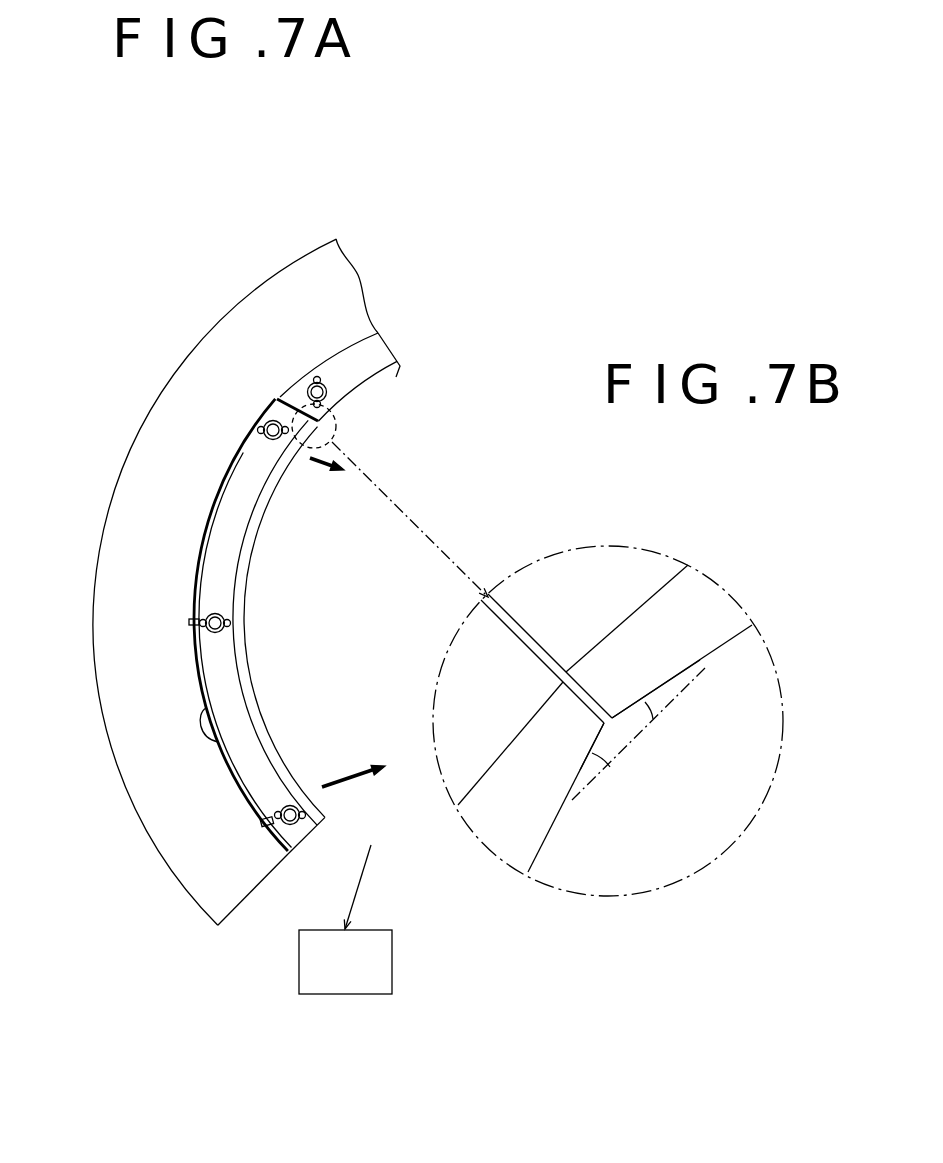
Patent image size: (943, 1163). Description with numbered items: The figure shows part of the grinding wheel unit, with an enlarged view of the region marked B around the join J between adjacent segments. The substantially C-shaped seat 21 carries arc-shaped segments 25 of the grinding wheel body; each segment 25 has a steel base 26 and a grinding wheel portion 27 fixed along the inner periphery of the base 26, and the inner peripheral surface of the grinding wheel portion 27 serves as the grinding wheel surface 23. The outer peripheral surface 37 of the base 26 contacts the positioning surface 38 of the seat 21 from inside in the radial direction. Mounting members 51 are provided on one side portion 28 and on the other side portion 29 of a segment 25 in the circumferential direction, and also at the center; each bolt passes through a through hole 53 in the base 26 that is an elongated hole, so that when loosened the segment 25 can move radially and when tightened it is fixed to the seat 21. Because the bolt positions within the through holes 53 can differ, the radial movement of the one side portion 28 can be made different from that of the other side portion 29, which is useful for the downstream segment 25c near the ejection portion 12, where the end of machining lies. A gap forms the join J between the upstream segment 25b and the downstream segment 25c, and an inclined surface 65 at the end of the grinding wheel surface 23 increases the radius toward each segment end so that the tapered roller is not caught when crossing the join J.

In FIG. 7A, the ejection portion 12 is at (345, 919).
In FIG. 7A, the seat 21 is at (122, 695).
In FIG. 7A, the grinding wheel surface 23 is at (289, 760).
In FIG. 7B, the grinding wheel surface 23 is at (732, 642).
In FIG. 7A, the segment 25 is at (402, 368).
In FIG. 7B, the segment on the upstream side 25b is at (687, 658).
In FIG. 7B, the segment on the downstream side 25c is at (553, 792).
In FIG. 7A, the base 26 is at (220, 537).
In FIG. 7A, the grinding wheel portion 27 is at (248, 588).
In FIG. 7A, the one side portion 28 is at (300, 455).
In FIG. 7A, the other side portion 29 is at (326, 800).
In FIG. 7A, the outer peripheral surface 37 is at (230, 790).
In FIG. 7A, the positioning surface 38 is at (224, 724).
In FIG. 7A, the mounting member 51 is at (262, 430).
In FIG. 7A, the through hole 53 is at (268, 424).
In FIG. 7B, the inclined surface 65 is at (653, 718).
In FIG. 7A, the join J is at (277, 390).
In FIG. 7B, the join J is at (516, 632).
In FIG. 7A, the detail region B is at (390, 500).